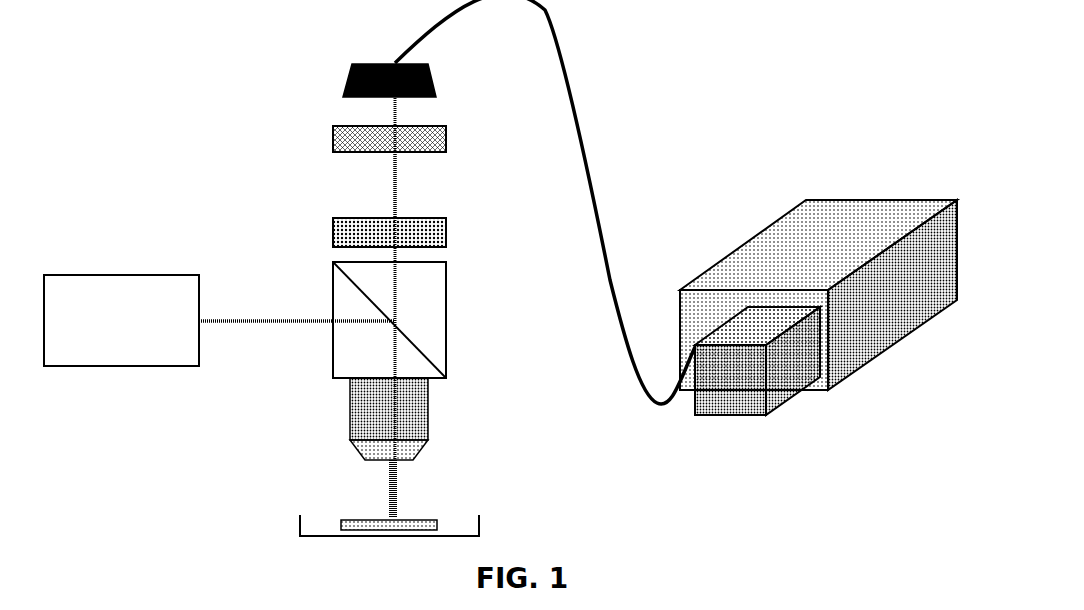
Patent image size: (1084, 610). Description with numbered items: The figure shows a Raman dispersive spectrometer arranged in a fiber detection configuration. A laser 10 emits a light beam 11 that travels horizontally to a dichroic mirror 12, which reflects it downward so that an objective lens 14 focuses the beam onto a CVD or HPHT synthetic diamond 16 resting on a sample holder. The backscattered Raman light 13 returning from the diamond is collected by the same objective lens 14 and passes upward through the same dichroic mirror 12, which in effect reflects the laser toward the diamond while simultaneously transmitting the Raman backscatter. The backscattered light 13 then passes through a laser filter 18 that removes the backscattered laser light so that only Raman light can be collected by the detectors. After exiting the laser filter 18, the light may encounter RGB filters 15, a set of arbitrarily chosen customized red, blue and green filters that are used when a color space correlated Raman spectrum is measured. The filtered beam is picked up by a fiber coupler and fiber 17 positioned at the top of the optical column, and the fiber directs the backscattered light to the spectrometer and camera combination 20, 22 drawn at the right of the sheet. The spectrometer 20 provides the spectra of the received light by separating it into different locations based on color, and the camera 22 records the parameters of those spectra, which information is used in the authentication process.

The laser 10 is at (125, 367).
The light beam 11 is at (275, 325).
The dichroic mirror 12 is at (460, 320).
The backscattered Raman light 13 is at (399, 189).
The objective lens 14 is at (467, 420).
The RGB filters 15 is at (444, 156).
The CVD or HPHT synthetic diamond 16 is at (415, 515).
The fiber coupler and fiber 17 is at (345, 80).
The laser filter 18 is at (446, 240).
The spectrometer 20 is at (782, 406).
The camera 22 is at (870, 360).